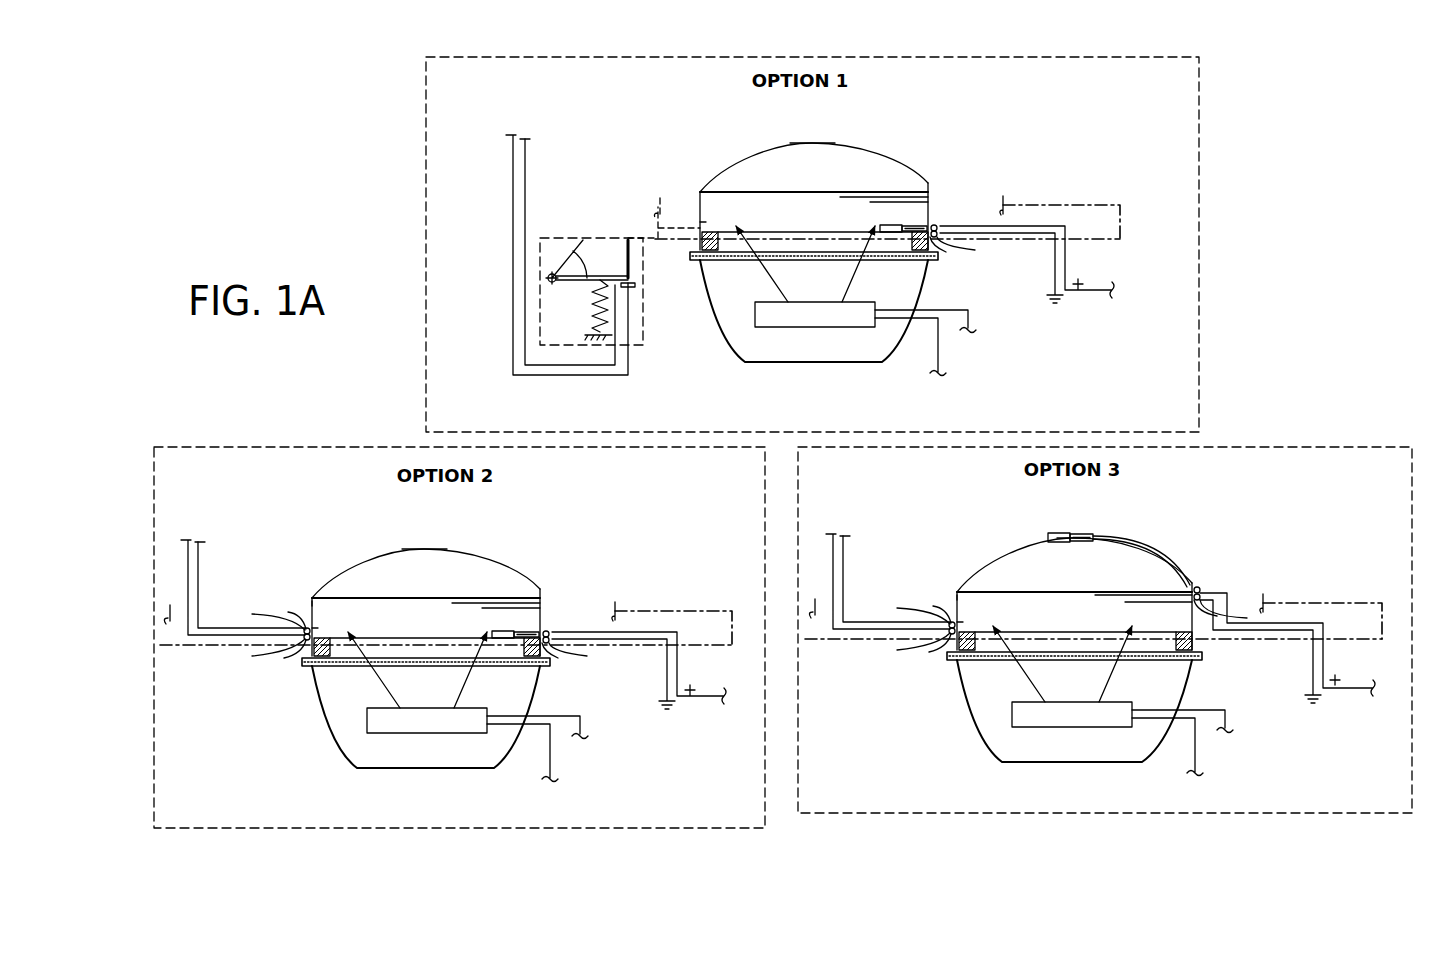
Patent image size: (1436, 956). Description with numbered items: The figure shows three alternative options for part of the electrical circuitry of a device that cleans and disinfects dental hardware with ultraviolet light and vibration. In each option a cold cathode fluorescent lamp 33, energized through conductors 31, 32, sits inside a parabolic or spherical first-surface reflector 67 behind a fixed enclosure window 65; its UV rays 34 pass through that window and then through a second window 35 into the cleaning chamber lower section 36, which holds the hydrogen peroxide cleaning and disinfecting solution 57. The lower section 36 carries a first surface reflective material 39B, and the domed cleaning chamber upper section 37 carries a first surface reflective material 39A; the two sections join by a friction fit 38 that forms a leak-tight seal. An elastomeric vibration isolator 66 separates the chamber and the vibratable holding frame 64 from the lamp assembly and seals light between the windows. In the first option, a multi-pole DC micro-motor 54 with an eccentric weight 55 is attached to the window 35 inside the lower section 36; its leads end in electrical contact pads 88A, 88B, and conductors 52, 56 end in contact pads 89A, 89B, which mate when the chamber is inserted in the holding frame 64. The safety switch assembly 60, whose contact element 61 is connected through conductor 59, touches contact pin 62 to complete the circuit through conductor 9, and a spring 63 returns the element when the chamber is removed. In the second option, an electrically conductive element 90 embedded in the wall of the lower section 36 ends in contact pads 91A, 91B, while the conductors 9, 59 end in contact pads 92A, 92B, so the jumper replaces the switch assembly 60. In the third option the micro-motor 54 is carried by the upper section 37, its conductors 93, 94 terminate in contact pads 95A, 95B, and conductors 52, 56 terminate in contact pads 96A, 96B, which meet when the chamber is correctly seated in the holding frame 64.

The conductor 9 is at (512, 152).
The conductor 31 is at (968, 322).
The conductor 32 is at (940, 368).
The cold cathode fluorescent (CCF) lamp 33 is at (773, 327).
The UV rays 34 is at (780, 281).
The second window 35 is at (824, 237).
The cleaning chamber lower section 36 is at (696, 224).
The cleaning chamber upper section 37 is at (723, 168).
The friction fit 38 is at (925, 190).
The first surface reflective material 39A is at (806, 144).
The first surface reflective material 39B is at (702, 222).
The conductor 52 is at (1067, 262).
The multi-pole DC micro-motor 54 is at (886, 224).
The eccentric weight 55 is at (918, 225).
The conductor 56 is at (1054, 259).
The cleaning and disinfecting solution 57 is at (781, 206).
The conductor 59 is at (527, 182).
The switch assembly 60 is at (567, 237).
The contact element 61 is at (617, 275).
The contact pin 62 is at (637, 285).
The spring 63 is at (594, 290).
The vibratable holding frame 64 is at (1048, 202).
The fixed enclosure window 65 is at (692, 258).
The elastomeric vibration isolator 66 is at (702, 242).
The first-surface reflector 67 is at (920, 296).
The electrical contact pad 88A is at (937, 226).
The electrical contact pad 88B is at (758, 457).
The electrical contact pad 89A is at (940, 231).
The electrical contact pad 89B is at (779, 457).
The electrically conductive element 90 is at (647, 623).
The electrical contact pad 91A is at (610, 609).
The electrical contact pad 91B is at (607, 654).
The electrical contact pad 92A is at (589, 609).
The electrical contact pad 92B is at (588, 653).
The electrical conductor 93 is at (1141, 548).
The electrical conductor 94 is at (1140, 549).
The electrical contact pad 95A is at (1214, 569).
The electrical contact pad 95B is at (1217, 635).
The electrical contact pad 96A is at (1223, 582).
The electrical contact pad 96B is at (1237, 633).